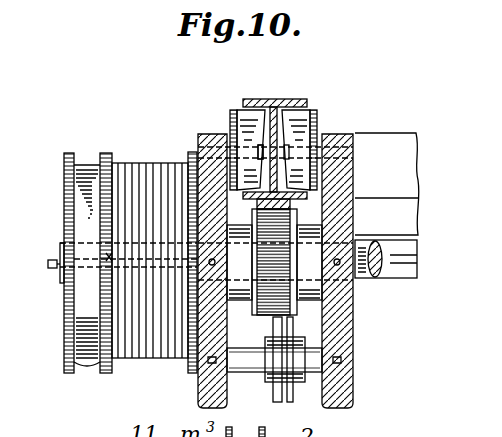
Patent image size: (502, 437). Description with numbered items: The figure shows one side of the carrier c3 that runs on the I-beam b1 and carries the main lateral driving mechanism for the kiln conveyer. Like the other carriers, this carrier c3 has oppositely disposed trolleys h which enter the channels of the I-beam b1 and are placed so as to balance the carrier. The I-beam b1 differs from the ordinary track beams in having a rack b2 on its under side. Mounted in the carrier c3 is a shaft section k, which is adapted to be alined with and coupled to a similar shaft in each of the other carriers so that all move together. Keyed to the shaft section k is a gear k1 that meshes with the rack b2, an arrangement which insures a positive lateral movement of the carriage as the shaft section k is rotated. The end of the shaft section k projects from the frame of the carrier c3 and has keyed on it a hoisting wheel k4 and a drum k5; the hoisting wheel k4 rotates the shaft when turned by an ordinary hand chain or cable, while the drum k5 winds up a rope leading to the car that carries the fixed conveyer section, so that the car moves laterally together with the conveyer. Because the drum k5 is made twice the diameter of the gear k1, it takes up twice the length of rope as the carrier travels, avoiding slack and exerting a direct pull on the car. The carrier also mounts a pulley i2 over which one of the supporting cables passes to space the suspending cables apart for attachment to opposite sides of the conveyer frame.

The trolleys h is at (302, 118).
The I-beam b1 is at (276, 162).
The carrier c3 is at (383, 153).
The rack b2 is at (418, 198).
The shaft section k is at (385, 284).
The gear k1 is at (303, 292).
The pulley i2 is at (292, 384).
The hoisting wheel k4 is at (92, 348).
The drum k5 is at (152, 348).